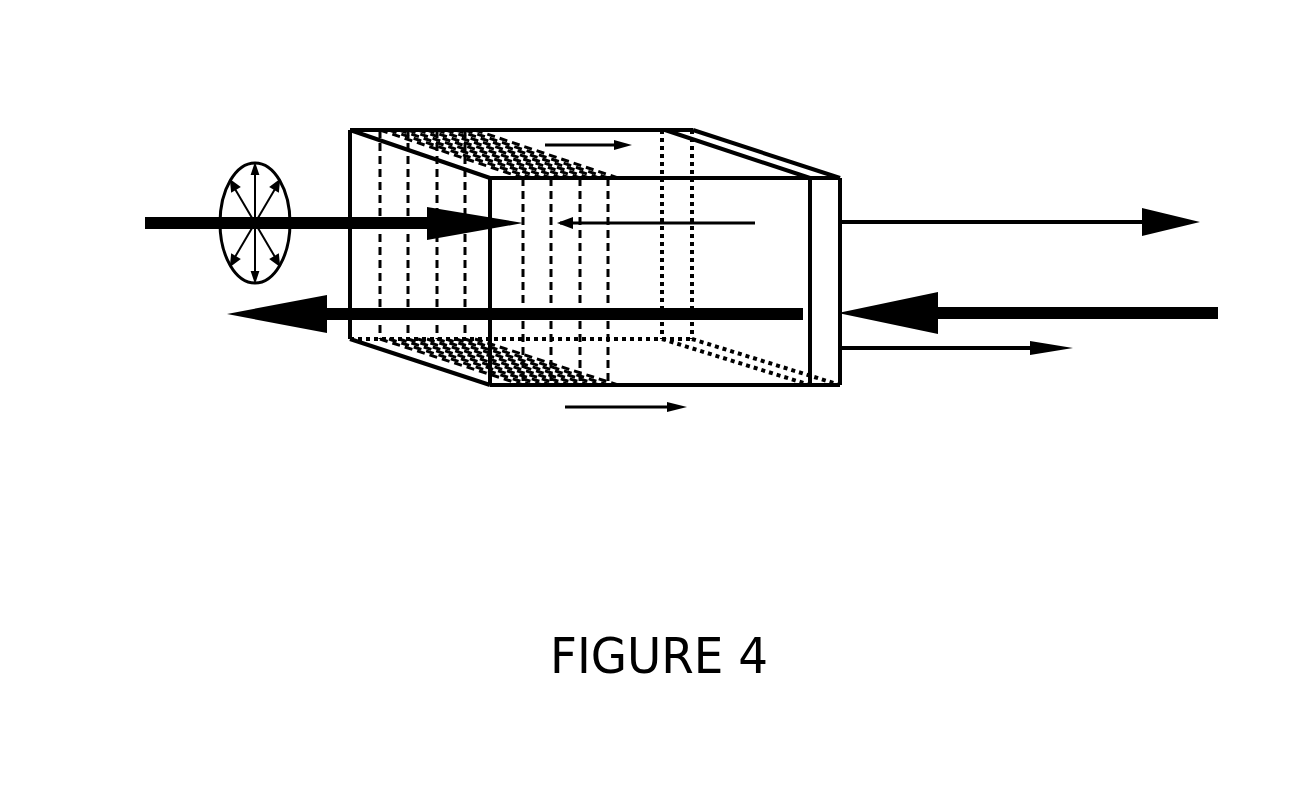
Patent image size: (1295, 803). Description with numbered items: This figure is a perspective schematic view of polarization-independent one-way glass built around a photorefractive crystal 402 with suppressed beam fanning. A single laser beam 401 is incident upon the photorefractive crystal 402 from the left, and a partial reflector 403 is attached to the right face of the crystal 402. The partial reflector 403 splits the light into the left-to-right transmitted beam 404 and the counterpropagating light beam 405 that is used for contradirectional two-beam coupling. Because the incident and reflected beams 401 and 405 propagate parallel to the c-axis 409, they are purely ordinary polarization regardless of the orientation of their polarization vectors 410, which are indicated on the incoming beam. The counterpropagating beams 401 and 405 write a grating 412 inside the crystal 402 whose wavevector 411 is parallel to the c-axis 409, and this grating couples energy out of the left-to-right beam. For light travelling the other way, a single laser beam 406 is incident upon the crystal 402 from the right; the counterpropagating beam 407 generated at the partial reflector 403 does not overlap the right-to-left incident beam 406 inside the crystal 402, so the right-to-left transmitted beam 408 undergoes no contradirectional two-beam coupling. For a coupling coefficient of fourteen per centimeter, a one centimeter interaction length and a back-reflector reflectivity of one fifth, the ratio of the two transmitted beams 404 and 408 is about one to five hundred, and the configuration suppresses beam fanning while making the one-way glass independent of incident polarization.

The laser beam 401 is at (162, 216).
The photorefractive crystal 402 is at (747, 385).
The partial reflector 403 is at (755, 140).
The left-to-right transmitted beam 404 is at (955, 222).
The counterpropagating light beam 405 is at (647, 223).
The laser beam 406 is at (1203, 334).
The counterpropagating beam 407 is at (938, 350).
The right-to-left transmitted beam 408 is at (308, 330).
The c-axis 409 is at (615, 410).
The polarization vectors 410 is at (243, 168).
The wavevector 411 is at (582, 140).
The grating 412 is at (513, 133).